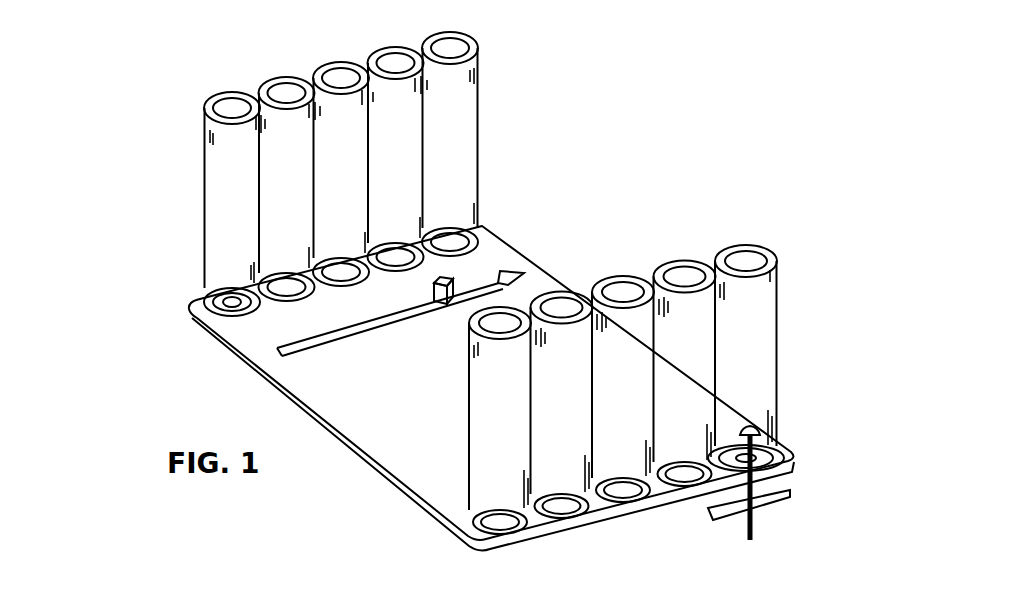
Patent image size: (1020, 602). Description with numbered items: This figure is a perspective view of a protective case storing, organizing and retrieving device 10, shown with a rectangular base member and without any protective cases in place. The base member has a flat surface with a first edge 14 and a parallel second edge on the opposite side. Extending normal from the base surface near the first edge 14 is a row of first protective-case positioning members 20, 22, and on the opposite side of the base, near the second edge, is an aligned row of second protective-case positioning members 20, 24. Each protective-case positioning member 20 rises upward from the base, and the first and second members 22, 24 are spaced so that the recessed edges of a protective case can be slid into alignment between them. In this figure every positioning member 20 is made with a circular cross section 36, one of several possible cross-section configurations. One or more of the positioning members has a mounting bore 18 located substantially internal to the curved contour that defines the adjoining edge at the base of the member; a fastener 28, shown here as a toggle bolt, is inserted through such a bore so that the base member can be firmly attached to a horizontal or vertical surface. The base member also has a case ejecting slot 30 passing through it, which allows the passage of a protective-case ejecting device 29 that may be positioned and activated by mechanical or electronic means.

The protective case storing, organizing and retrieving device 10 is at (618, 212).
The first edge 14 is at (350, 244).
The mounting ring / recess 18 is at (207, 313).
The protective-case positioning member 20 is at (481, 283).
The first protective-case positioning member 22 is at (217, 232).
The second protective-case positioning member 24 is at (478, 422).
The fastener 28 is at (753, 535).
The protective-case ejecting device 29 is at (450, 280).
The case ejecting slot 30 is at (503, 275).
The circular cross section 36 is at (470, 128).